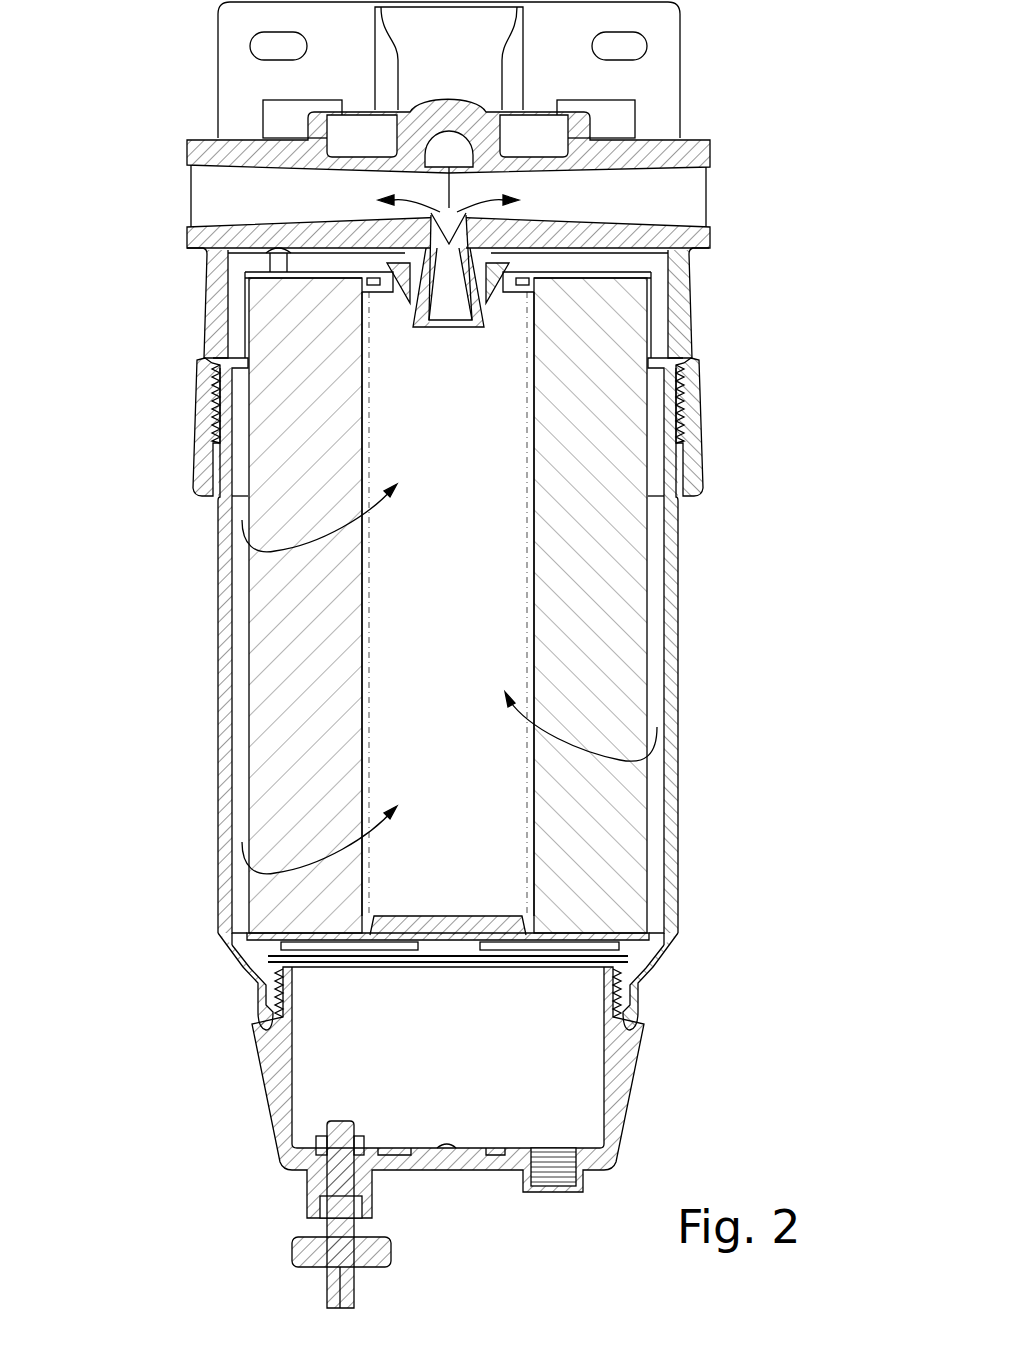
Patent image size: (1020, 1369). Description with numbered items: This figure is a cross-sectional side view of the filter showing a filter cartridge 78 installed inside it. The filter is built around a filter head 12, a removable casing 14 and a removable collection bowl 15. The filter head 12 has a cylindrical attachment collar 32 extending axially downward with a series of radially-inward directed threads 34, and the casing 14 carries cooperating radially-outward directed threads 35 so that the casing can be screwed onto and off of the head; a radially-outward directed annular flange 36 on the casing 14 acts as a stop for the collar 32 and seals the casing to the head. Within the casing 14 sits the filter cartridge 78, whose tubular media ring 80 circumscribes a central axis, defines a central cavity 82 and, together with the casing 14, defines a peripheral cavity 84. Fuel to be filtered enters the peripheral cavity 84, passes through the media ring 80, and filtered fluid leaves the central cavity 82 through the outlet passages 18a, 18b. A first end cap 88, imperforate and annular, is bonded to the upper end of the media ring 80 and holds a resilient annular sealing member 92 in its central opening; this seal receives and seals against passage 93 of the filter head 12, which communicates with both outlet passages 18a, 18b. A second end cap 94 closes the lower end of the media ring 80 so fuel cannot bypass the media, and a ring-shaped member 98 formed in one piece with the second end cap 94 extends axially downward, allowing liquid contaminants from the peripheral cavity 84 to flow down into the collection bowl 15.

The filter head 12 is at (643, 83).
The removable casing 14 is at (667, 695).
The removable collection bowl 15 is at (623, 1093).
The outlet passage 18a is at (197, 195).
The outlet passage 18b is at (712, 195).
The cylindrical attachment collar 32 is at (690, 302).
The radially-inward directed threads 34 is at (688, 455).
The radially-outward directed threads 35 is at (215, 410).
The radially-outward directed annular flange 36 is at (213, 497).
The filter cartridge 78 is at (663, 891).
The media ring 80 is at (446, 635).
The central cavity 82 is at (466, 634).
The peripheral cavity 84 is at (655, 638).
The first end cap 88 is at (313, 272).
The resilient annular sealing member 92 is at (507, 295).
The passage 93 is at (413, 312).
The second end cap 94 is at (253, 957).
The ring-shaped member 98 is at (630, 962).